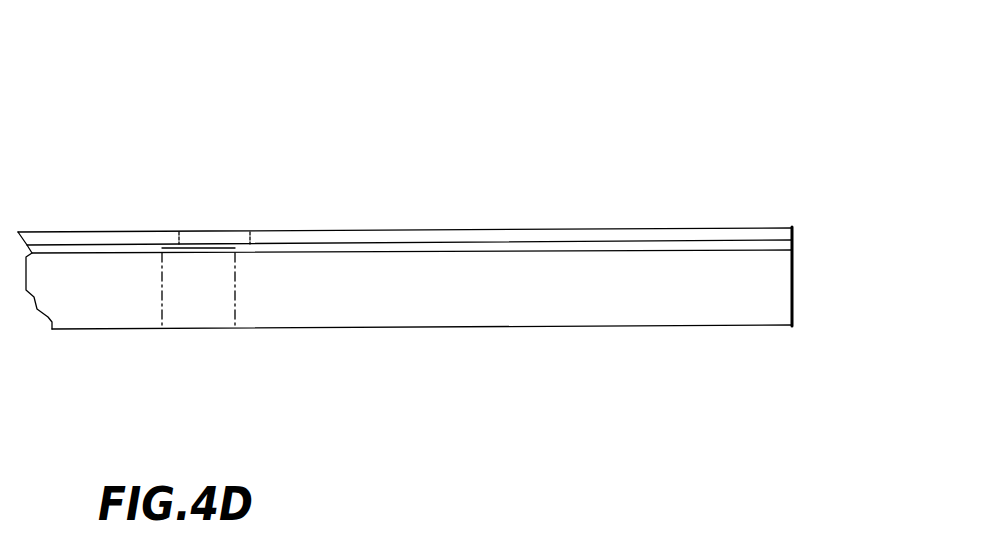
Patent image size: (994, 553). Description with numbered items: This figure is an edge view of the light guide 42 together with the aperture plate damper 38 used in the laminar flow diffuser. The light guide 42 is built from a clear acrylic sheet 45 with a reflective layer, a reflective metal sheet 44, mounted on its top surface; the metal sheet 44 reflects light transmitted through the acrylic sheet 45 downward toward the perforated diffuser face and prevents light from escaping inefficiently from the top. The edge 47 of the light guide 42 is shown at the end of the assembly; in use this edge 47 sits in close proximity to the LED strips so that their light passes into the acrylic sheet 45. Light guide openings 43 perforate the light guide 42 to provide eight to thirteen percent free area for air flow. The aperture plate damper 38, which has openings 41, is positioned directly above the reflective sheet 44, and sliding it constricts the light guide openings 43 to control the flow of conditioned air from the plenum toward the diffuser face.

The aperture plate damper 38 is at (550, 228).
The openings 41 is at (236, 235).
The light guide 42 is at (292, 80).
The light guide openings 43 is at (200, 265).
The reflective metal sheet 44 is at (623, 250).
The clear acrylic sheet 45 is at (440, 293).
The edge 47 is at (796, 270).